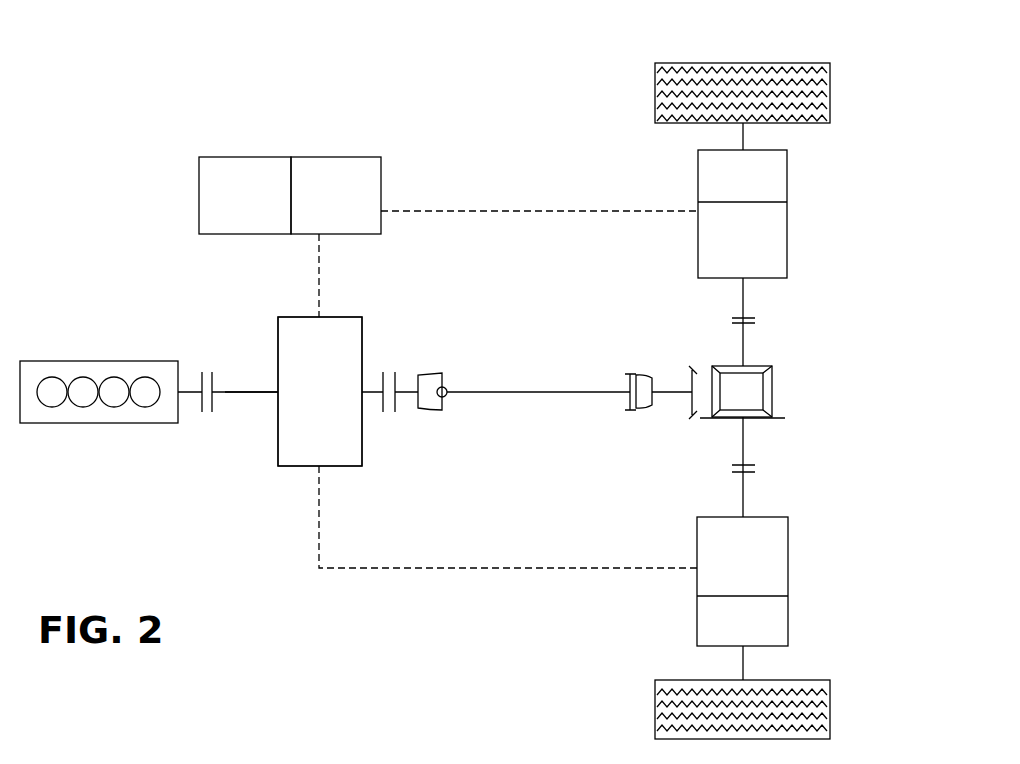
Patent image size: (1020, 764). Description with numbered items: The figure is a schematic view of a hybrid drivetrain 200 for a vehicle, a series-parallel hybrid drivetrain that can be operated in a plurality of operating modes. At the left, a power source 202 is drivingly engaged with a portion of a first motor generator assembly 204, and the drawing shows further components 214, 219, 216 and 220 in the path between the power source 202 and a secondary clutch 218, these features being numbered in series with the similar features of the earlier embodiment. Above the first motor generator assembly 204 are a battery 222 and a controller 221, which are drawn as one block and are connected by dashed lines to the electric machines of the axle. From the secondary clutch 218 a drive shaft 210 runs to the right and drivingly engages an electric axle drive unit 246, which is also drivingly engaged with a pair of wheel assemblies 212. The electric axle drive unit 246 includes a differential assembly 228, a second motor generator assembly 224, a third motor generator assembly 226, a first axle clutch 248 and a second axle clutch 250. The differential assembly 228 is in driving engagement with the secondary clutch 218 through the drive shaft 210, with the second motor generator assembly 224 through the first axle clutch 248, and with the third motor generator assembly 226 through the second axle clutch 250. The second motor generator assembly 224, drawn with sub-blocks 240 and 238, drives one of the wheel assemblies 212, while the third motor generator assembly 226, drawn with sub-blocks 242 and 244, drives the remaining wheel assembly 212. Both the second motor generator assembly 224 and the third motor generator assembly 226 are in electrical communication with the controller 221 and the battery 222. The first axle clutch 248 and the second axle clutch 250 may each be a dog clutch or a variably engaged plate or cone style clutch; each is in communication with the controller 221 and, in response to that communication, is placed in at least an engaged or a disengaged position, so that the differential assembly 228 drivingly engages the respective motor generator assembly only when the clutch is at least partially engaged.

The hybrid drivetrain 200 is at (744, 38).
The power source 202 is at (70, 361).
The first motor generator assembly 204 is at (160, 280).
The drive shaft 210 is at (493, 390).
The wheel assemblies 212 is at (830, 90).
The clutch 214 is at (200, 410).
The transmission 216 is at (293, 468).
The secondary clutch 218 is at (398, 380).
The input shaft 219 is at (247, 395).
The clutch 220 is at (374, 390).
The controller 221 is at (337, 157).
The battery 222 is at (255, 157).
The second motor generator assembly 224 is at (795, 596).
The third motor generator assembly 226 is at (794, 200).
The differential assembly 228 is at (778, 373).
The motor 238 is at (742, 617).
The inverter 240 is at (742, 554).
The inverter 242 is at (742, 175).
The motor 244 is at (742, 242).
The electric axle drive unit 246 is at (617, 153).
The first axle clutch 248 is at (755, 466).
The second axle clutch 250 is at (755, 318).